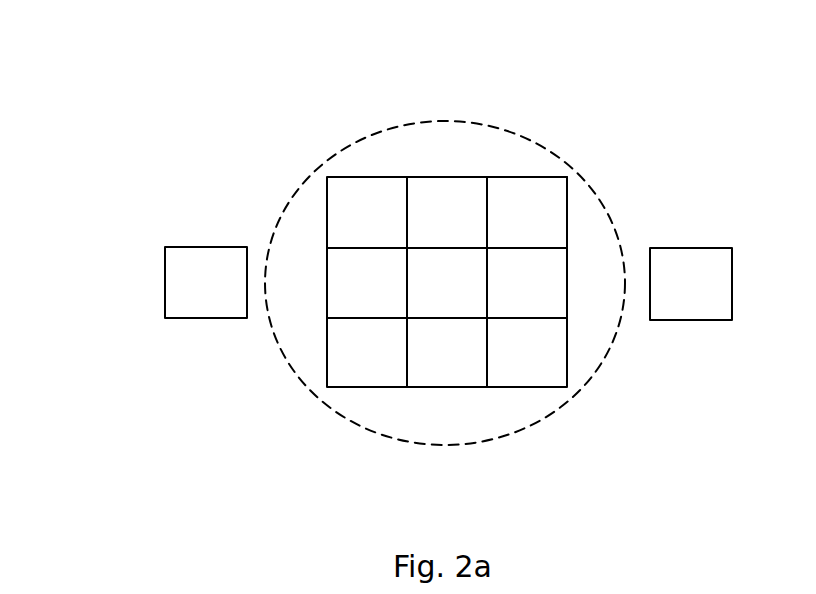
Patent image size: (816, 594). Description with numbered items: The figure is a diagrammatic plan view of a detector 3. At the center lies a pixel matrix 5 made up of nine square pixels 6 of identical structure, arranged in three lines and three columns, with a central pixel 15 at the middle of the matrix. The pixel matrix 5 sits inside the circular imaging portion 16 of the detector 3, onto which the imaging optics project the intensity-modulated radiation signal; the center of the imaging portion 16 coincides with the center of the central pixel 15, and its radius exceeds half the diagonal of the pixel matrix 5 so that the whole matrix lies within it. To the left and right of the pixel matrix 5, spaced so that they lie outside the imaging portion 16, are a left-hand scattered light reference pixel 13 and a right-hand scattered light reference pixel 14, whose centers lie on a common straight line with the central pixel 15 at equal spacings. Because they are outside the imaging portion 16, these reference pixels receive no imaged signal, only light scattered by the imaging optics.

The detector 3 is at (206, 409).
The pixel matrix 5 is at (534, 404).
The pixels 6 is at (540, 215).
The left-hand scattered light reference pixel 13 is at (188, 298).
The right-hand scattered light reference pixel 14 is at (710, 298).
The central pixel 15 is at (443, 266).
The imaging portion 16 is at (315, 159).